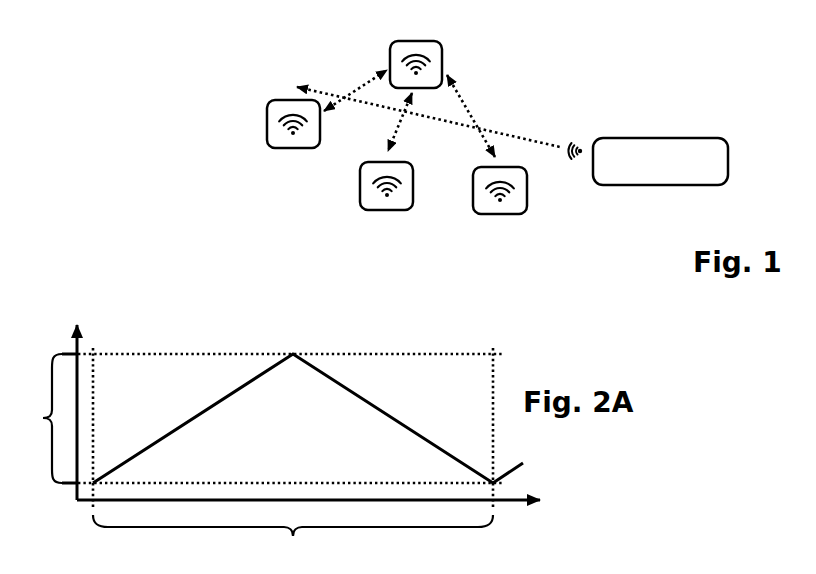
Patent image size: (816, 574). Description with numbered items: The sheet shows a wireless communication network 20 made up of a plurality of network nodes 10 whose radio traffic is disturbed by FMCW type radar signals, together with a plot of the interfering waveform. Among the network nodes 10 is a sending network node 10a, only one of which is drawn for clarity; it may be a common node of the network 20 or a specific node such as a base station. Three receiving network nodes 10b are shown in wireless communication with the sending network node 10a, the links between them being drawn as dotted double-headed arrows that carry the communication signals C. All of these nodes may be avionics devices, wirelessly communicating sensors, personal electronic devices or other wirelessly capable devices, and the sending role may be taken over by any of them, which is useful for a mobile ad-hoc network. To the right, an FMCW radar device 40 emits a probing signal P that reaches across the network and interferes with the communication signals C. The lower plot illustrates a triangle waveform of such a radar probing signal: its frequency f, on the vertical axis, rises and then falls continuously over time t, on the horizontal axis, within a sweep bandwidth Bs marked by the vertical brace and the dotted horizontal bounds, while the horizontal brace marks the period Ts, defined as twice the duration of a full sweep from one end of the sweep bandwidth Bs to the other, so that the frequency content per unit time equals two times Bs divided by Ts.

In FIG. 1, the wireless communication network 20 is at (286, 54).
In FIG. 1, the network nodes 10 is at (244, 132).
In FIG. 1, the sending network node 10a is at (442, 57).
In FIG. 1, the receiving network nodes 10b is at (280, 148).
In FIG. 1, the FMCW radar device 40 is at (608, 186).
In FIG. 1, the communication signals C is at (343, 106).
In FIG. 1, the probing signal P is at (513, 136).
In FIG. 2A, the sweep bandwidth Bs is at (40, 418).
In FIG. 2A, the sweep period Ts is at (293, 540).
In FIG. 2A, the frequency f is at (52, 323).
In FIG. 2A, the time t is at (538, 530).